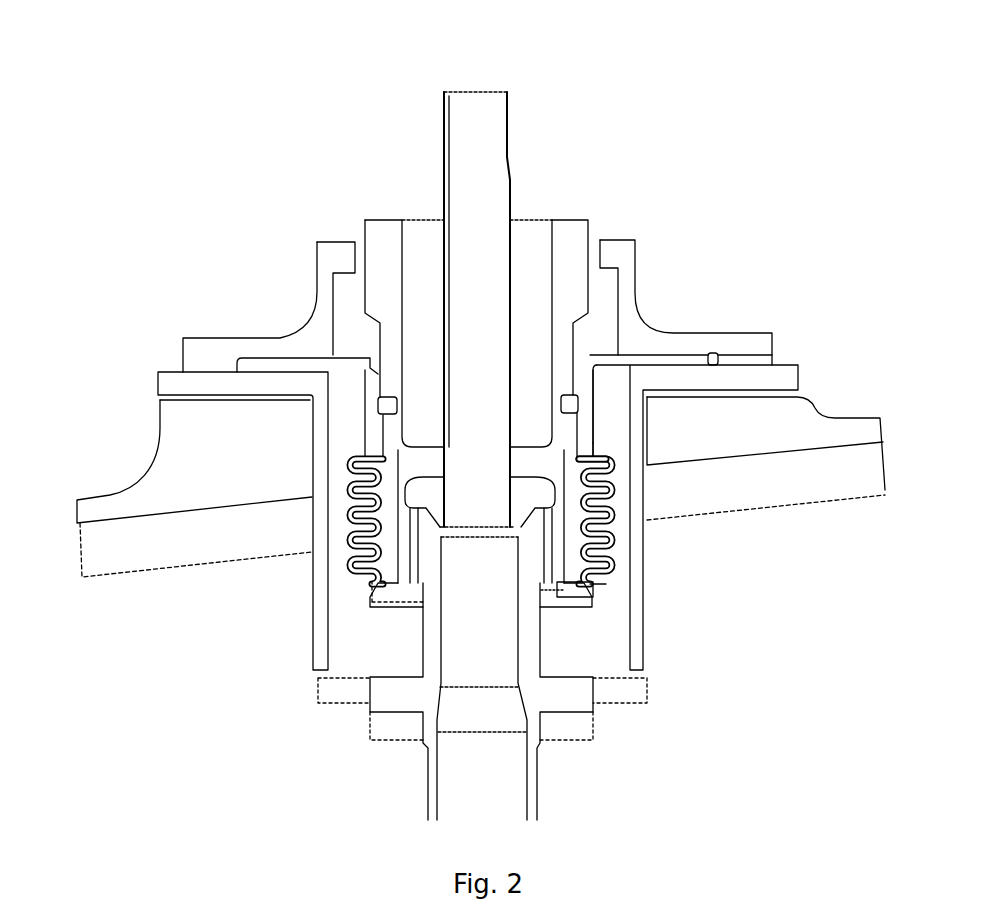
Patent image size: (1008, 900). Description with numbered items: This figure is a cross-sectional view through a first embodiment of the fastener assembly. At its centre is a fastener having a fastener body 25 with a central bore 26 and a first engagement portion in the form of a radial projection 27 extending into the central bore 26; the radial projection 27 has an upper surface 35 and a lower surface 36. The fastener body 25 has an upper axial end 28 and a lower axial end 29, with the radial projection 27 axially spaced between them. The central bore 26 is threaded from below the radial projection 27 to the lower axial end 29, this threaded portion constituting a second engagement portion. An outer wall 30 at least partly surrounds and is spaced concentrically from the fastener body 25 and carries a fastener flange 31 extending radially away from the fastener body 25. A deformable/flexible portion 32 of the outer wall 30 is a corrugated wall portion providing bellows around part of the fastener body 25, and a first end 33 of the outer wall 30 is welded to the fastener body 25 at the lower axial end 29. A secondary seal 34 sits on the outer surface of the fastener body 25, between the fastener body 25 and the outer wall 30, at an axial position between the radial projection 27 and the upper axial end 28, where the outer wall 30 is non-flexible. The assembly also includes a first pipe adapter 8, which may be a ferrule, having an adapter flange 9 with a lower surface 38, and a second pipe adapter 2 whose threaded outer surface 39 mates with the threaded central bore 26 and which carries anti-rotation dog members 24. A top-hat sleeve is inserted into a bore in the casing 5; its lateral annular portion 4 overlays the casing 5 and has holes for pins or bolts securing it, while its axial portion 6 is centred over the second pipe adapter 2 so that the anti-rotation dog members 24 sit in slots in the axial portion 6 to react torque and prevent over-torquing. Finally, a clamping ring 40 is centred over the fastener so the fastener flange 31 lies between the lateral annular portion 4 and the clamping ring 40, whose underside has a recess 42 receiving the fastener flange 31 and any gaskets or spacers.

The second pipe adapter 2 is at (530, 655).
The lateral annular portion 4 is at (785, 375).
The casing 5 is at (760, 423).
The axial portion 6 is at (323, 658).
The first pipe adapter 8 is at (444, 157).
The adapter flange 9 is at (438, 497).
The anti-rotation dog members 24 is at (387, 693).
The fastener body 25 is at (568, 245).
The central bore 26 is at (535, 243).
The radial projection 27 is at (420, 464).
The upper axial end 28 is at (372, 222).
The lower axial end 29 is at (407, 582).
The outer wall 30 is at (587, 433).
The fastener flange 31 is at (630, 352).
The deformable/flexible portion 32 is at (613, 548).
The first end 33 is at (607, 577).
The secondary seal 34 is at (388, 400).
The upper surface 35 is at (425, 436).
The lower surface 36 is at (613, 508).
The lower surface 38 is at (583, 560).
The threaded outer surface 39 is at (413, 562).
The clamping ring 40 is at (228, 338).
The recess 42 is at (716, 357).